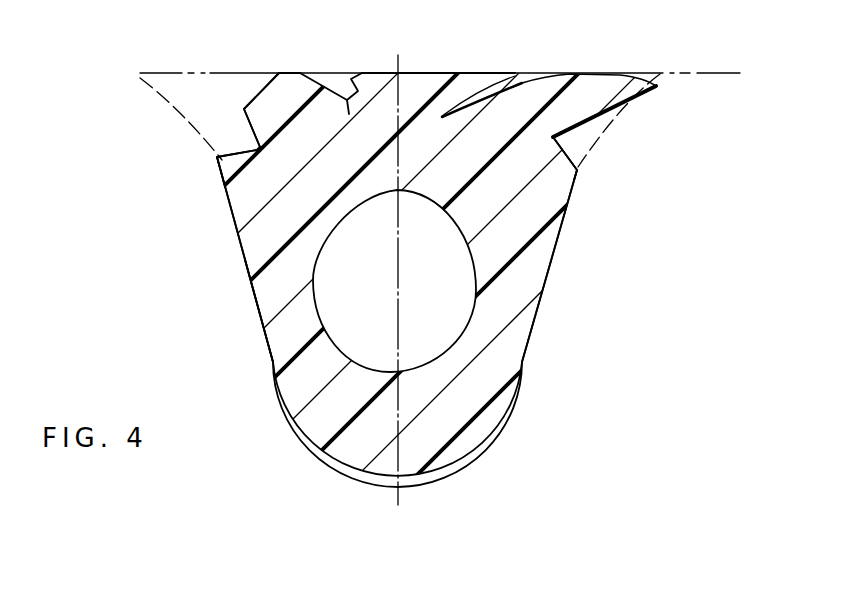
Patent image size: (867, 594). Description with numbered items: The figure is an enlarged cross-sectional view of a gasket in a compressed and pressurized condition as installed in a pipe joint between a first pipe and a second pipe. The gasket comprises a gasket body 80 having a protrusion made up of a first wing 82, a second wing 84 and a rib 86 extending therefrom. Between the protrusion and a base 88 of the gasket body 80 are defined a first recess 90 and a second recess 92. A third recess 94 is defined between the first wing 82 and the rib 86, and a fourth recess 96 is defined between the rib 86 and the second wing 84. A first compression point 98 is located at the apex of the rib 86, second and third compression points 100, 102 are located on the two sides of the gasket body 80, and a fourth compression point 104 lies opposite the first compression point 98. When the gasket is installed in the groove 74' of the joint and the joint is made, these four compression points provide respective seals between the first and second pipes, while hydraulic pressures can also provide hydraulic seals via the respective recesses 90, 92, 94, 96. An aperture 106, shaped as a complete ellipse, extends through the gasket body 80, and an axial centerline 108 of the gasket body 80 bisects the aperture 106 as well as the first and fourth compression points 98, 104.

The gasket body 80 is at (544, 320).
The first wing 82 is at (282, 92).
The second wing 84 is at (592, 83).
The rib 86 is at (425, 90).
The base 88 is at (262, 287).
The first recess 90 is at (243, 143).
The second recess 92 is at (574, 139).
The third recess 94 is at (341, 83).
The fourth recess 96 is at (515, 78).
The first compression point 98 is at (413, 72).
The second compression point 100 is at (240, 228).
The third compression point 102 is at (567, 205).
The fourth compression point 104 is at (417, 486).
The aperture 106 is at (312, 283).
The axial centerline 108 is at (393, 495).
The pitch line 74' is at (400, 120).